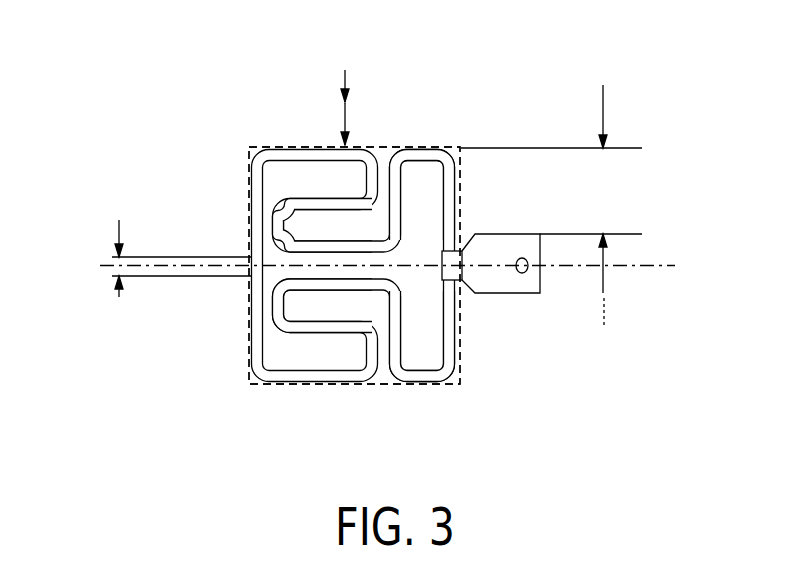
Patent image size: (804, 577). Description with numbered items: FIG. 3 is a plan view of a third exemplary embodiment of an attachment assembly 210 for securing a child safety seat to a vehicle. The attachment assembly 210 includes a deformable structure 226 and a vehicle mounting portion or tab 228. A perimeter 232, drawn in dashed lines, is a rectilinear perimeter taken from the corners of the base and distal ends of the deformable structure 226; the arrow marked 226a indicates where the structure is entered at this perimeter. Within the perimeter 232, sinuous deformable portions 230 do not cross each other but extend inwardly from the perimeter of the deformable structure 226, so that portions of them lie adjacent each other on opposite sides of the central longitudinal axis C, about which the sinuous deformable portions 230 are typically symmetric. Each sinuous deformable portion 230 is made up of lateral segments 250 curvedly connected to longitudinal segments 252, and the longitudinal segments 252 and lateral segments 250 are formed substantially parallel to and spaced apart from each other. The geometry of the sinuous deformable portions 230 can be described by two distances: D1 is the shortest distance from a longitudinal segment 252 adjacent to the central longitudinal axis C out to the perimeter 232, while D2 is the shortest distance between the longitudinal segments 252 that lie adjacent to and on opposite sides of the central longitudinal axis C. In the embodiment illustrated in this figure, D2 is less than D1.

The attachment assembly 210 is at (477, 89).
The deformable structure 226 is at (345, 70).
The inlet flow entering manifold 226a is at (349, 130).
The vehicle mounting portion or tab 228 is at (508, 284).
The sinuous deformable portions 230 is at (278, 240).
The perimeter 232 is at (387, 385).
The lateral segments 250 is at (402, 220).
The longitudinal segments 252 is at (318, 251).
The distance D1 is at (551, 206).
The distance D2 is at (118, 270).
The central longitudinal axis C is at (637, 266).